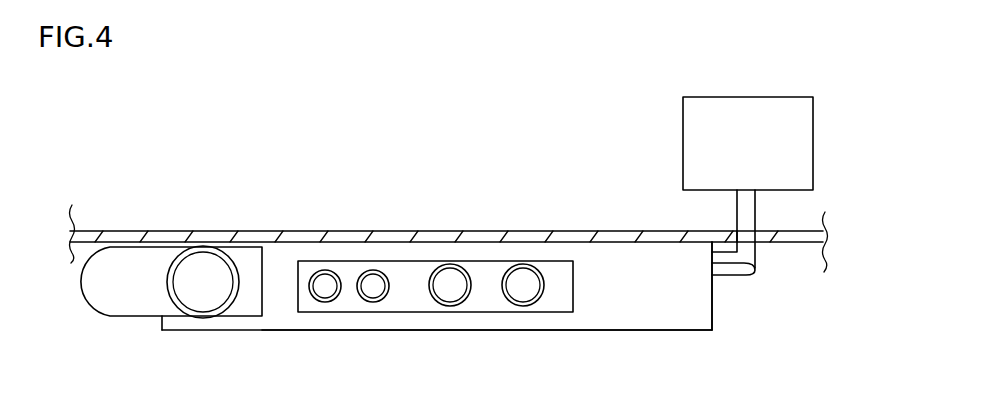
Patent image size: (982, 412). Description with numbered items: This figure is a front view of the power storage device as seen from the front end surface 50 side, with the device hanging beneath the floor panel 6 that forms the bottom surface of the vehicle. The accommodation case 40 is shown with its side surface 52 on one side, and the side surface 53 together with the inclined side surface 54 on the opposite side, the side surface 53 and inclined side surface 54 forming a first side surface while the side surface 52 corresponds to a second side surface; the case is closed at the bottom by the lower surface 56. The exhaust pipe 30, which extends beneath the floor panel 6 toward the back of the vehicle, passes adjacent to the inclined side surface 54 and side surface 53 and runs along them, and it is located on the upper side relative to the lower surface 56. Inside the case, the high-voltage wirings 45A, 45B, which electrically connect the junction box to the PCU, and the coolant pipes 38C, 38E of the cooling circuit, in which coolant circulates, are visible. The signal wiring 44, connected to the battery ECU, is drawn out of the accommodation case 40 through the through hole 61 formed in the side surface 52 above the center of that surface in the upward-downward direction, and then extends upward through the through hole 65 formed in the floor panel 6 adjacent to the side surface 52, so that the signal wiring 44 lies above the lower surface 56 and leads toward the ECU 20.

The floor panel 6 is at (486, 229).
The ECU 20 is at (738, 96).
The exhaust pipe 30 is at (105, 312).
The coolant pipe 38C is at (322, 302).
The coolant pipe 38E is at (372, 302).
The accommodation case 40 is at (598, 312).
The signal wiring 44 is at (756, 215).
The high-voltage wiring 45A is at (523, 306).
The high-voltage wiring 45B is at (450, 306).
The front end surface 50 is at (634, 312).
The side surface 52 is at (713, 310).
The side surface 53 is at (162, 320).
The inclined side surface 54 is at (232, 316).
The lower surface 56 is at (677, 331).
The through hole 61 is at (757, 268).
The through hole 65 is at (743, 233).